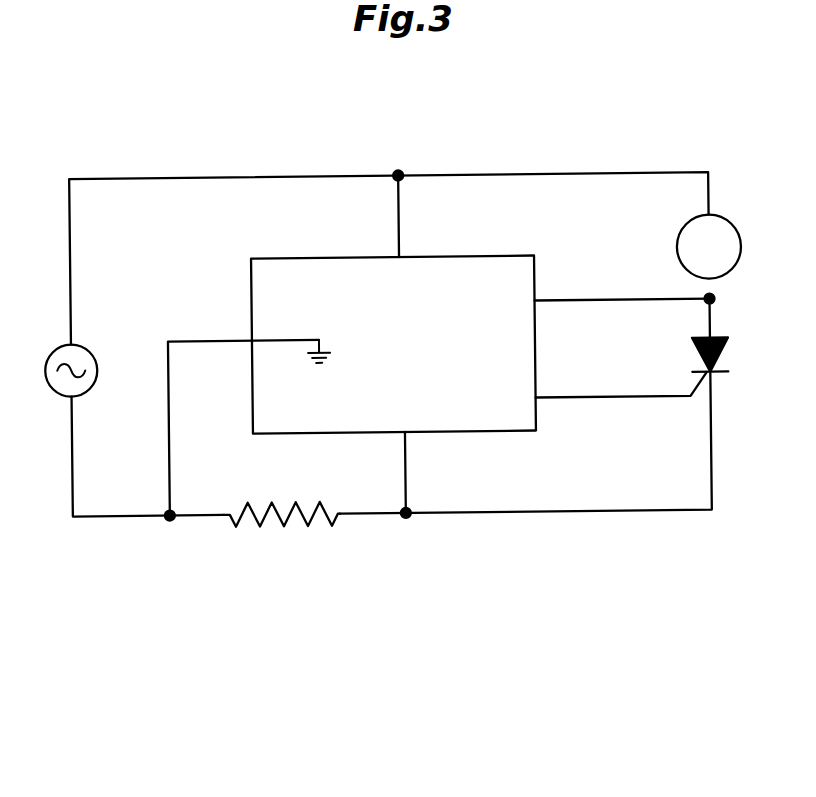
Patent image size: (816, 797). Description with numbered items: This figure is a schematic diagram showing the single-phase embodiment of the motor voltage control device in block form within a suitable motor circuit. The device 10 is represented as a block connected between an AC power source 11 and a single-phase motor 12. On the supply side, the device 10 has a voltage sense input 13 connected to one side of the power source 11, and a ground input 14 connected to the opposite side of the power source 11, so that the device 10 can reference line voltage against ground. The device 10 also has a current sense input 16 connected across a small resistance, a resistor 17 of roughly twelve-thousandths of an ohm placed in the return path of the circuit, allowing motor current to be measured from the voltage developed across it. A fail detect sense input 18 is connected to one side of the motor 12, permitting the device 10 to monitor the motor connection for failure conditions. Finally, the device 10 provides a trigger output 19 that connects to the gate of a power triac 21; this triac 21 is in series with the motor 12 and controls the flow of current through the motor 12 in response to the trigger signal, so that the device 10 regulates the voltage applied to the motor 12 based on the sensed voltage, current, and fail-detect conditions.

The motor voltage control device 10 is at (357, 248).
The AC power source 11 is at (84, 348).
The single-phase motor 12 is at (690, 222).
The voltage sense input 13 is at (400, 242).
The ground input 14 is at (208, 339).
The current sense input 16 is at (404, 470).
The resistor 17 is at (289, 505).
The fail detect sense input 18 is at (600, 301).
The trigger output 19 is at (586, 399).
The power triac 21 is at (694, 354).